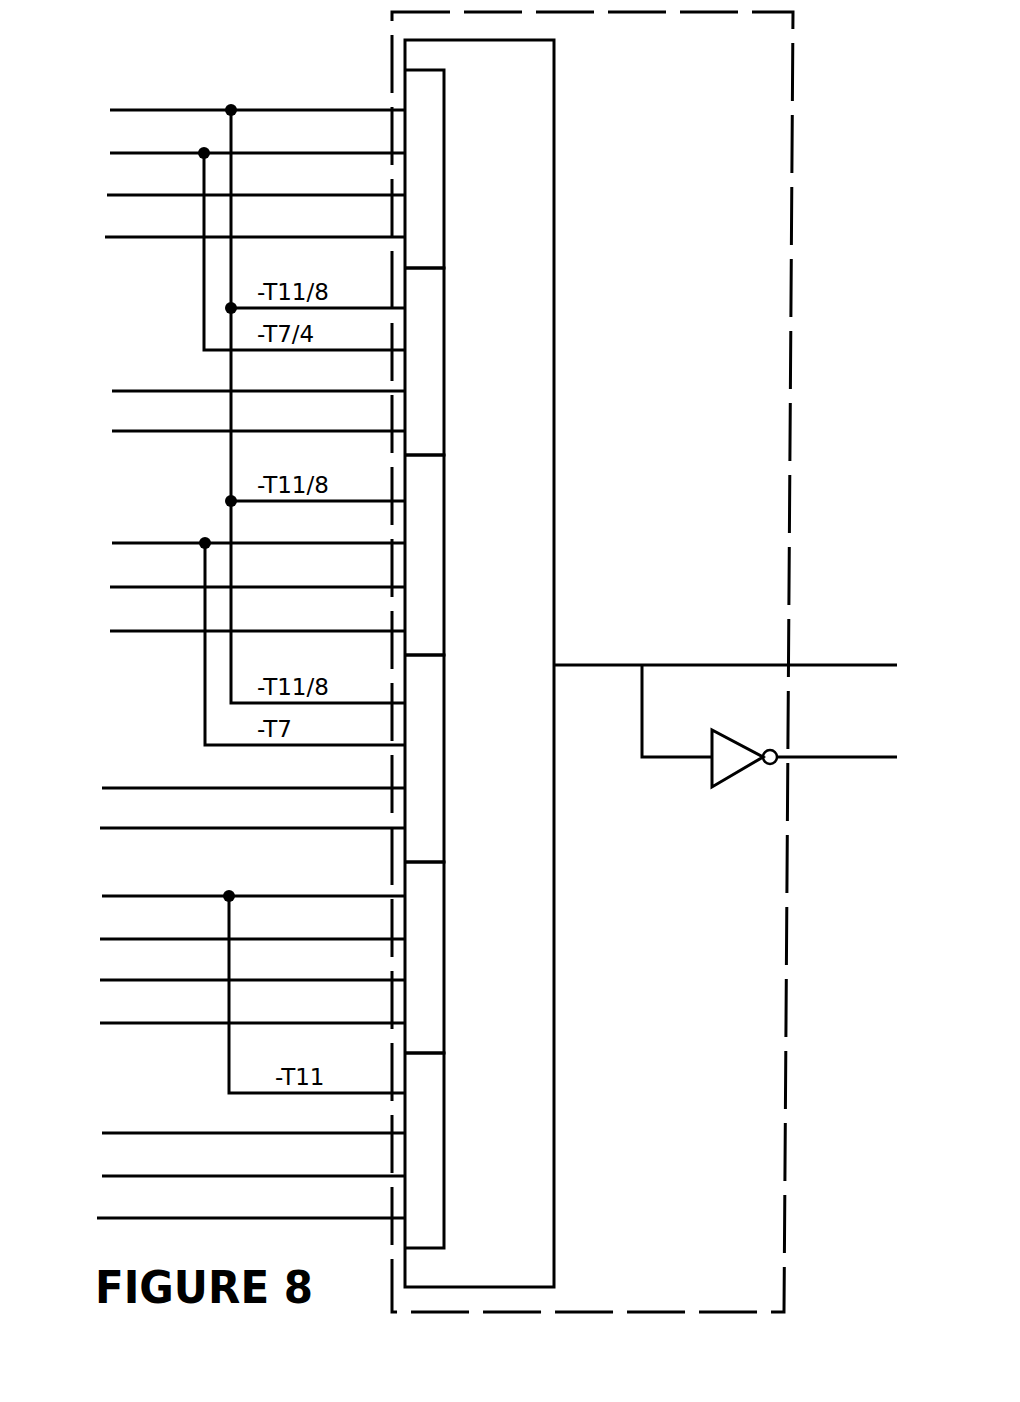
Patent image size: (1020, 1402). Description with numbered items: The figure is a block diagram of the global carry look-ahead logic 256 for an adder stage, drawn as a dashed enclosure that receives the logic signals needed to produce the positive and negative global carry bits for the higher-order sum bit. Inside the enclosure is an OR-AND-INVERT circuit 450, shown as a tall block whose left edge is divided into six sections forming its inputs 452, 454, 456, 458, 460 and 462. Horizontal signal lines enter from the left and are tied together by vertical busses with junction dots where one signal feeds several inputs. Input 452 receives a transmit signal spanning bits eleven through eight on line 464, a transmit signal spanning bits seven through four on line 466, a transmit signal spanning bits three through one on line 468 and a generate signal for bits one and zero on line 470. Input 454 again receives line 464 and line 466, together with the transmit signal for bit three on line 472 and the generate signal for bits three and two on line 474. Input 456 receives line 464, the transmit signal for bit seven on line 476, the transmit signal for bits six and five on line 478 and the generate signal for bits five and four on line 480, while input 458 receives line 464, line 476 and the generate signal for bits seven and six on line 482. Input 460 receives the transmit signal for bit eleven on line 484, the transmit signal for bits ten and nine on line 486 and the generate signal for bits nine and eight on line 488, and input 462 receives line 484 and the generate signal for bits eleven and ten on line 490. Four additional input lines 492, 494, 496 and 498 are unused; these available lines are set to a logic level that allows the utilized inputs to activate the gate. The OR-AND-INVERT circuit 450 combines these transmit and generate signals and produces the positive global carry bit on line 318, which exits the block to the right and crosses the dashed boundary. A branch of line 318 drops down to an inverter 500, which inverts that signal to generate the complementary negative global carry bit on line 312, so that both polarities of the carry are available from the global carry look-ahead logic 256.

The global carry look-ahead logic 256 is at (795, 240).
The OR-AND-INVERT circuit 450 is at (555, 85).
The input 452 is at (430, 172).
The input 454 is at (430, 360).
The input 456 is at (430, 545).
The input 458 is at (430, 760).
The input 460 is at (430, 950).
The input 462 is at (430, 1140).
The line 318 is at (682, 665).
The inverter 500 is at (708, 772).
The line 312 is at (813, 758).
The line 464 is at (132, 110).
The line 466 is at (132, 153).
The line 468 is at (130, 195).
The line 470 is at (130, 237).
The line 472 is at (145, 391).
The line 474 is at (145, 431).
The line 476 is at (142, 543).
The line 478 is at (142, 587).
The line 480 is at (142, 631).
The line 482 is at (127, 788).
The line 484 is at (132, 896).
The line 486 is at (127, 939).
The line 488 is at (127, 980).
The line 490 is at (142, 1133).
The input line 492 is at (127, 828).
The input line 494 is at (127, 1023).
The input line 496 is at (142, 1176).
The input line 498 is at (142, 1218).